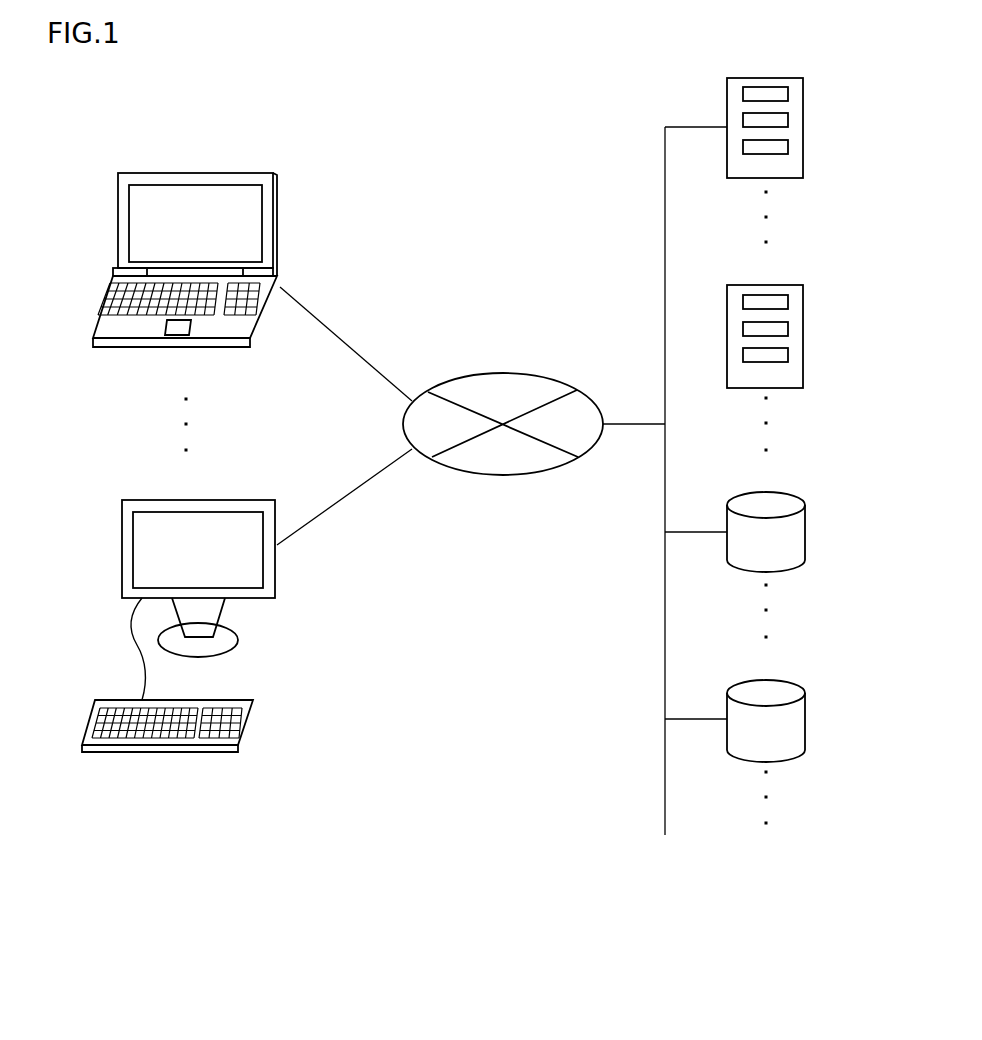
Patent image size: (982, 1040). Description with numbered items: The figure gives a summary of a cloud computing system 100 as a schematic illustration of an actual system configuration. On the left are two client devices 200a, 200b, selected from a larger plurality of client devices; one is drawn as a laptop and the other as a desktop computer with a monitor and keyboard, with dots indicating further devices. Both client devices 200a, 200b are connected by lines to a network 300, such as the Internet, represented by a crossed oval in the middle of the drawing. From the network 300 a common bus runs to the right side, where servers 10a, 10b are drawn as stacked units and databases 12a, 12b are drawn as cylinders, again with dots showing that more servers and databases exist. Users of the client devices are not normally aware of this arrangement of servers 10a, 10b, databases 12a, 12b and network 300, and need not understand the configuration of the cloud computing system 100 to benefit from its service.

The cloud computing system 100 is at (503, 900).
The client device 200a is at (235, 173).
The client device 200b is at (250, 480).
The network 300 is at (518, 352).
The server 10a is at (803, 122).
The server 10b is at (803, 330).
The database 12a is at (805, 530).
The database 12b is at (805, 719).